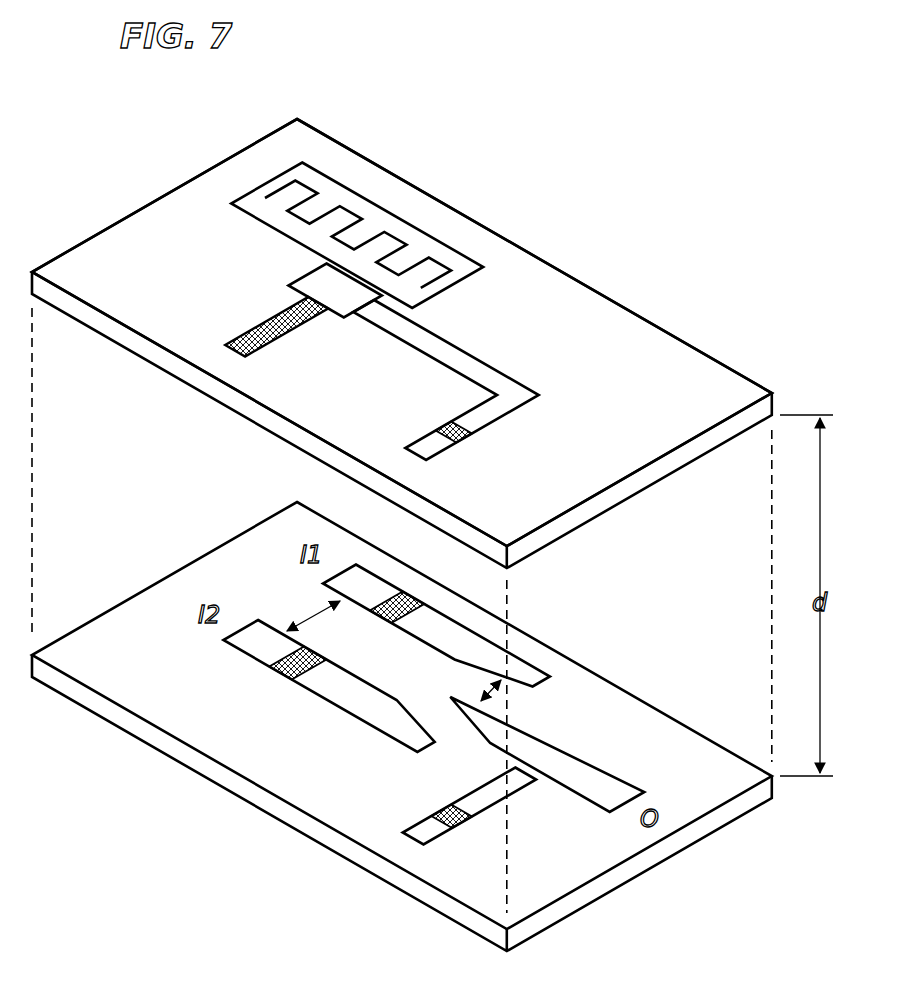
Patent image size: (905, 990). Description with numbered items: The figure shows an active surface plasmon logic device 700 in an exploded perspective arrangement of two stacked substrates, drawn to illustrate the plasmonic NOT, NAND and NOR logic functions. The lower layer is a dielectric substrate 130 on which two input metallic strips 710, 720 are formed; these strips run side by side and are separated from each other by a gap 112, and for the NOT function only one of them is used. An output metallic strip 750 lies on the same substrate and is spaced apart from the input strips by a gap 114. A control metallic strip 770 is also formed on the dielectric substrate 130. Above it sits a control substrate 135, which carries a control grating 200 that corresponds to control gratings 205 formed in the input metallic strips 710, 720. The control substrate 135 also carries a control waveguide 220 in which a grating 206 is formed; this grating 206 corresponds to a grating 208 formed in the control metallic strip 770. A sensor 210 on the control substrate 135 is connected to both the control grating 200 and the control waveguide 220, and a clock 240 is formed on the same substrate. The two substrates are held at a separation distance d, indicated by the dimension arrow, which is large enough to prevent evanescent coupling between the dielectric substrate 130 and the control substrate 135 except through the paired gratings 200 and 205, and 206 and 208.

The active surface plasmon logic device 700 is at (645, 153).
The control substrate 135 is at (402, 332).
The dielectric substrate 130 is at (402, 726).
The clock 240 is at (330, 197).
The sensor 210 is at (338, 287).
The control grating 200 is at (287, 337).
The control waveguide 220 is at (460, 362).
The grating 206 is at (463, 437).
The input metallic strip 710 is at (470, 645).
The input metallic strip 720 is at (343, 695).
The control gratings 205 is at (408, 597).
The output metallic strip 750 is at (593, 777).
The control metallic strip 770 is at (485, 798).
The grating 208 is at (462, 828).
The gap 112 is at (310, 613).
The gap 114 is at (490, 689).